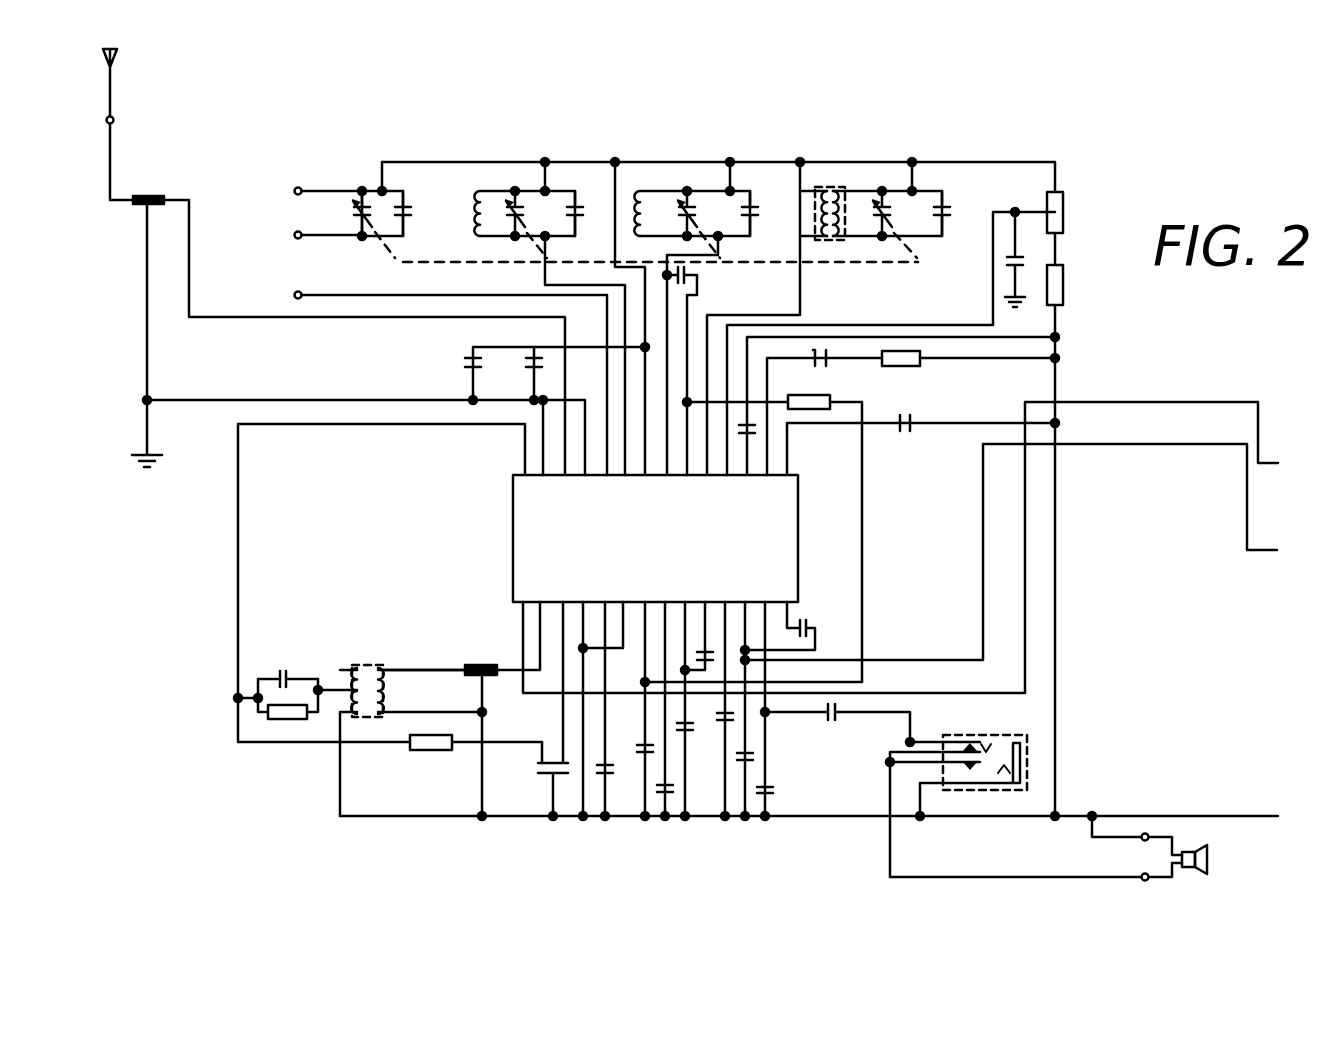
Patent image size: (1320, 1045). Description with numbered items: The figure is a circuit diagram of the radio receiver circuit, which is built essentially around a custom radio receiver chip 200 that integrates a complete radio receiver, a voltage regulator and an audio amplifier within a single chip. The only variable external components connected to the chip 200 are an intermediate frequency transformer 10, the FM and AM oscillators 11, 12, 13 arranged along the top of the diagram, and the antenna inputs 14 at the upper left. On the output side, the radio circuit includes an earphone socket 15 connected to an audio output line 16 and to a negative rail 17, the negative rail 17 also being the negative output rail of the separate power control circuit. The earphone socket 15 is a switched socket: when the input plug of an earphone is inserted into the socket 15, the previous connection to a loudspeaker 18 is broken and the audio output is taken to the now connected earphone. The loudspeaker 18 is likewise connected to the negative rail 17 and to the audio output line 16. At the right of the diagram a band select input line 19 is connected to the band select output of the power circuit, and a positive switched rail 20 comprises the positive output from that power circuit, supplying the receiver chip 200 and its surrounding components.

The intermediate frequency transformer 10 is at (368, 663).
The FM and AM oscillator 11 is at (518, 175).
The FM and AM oscillator 12 is at (709, 175).
The FM and AM oscillator 13 is at (870, 175).
The antenna inputs 14 is at (111, 146).
The earphone socket 15 is at (1027, 762).
The audio output line 16 is at (910, 723).
The negative rail 17 is at (1193, 816).
The loudspeaker 18 is at (1208, 862).
The band select input line 19 is at (1172, 402).
The positive switched rail 20 is at (1180, 445).
The radio receiver chip 200 is at (648, 545).